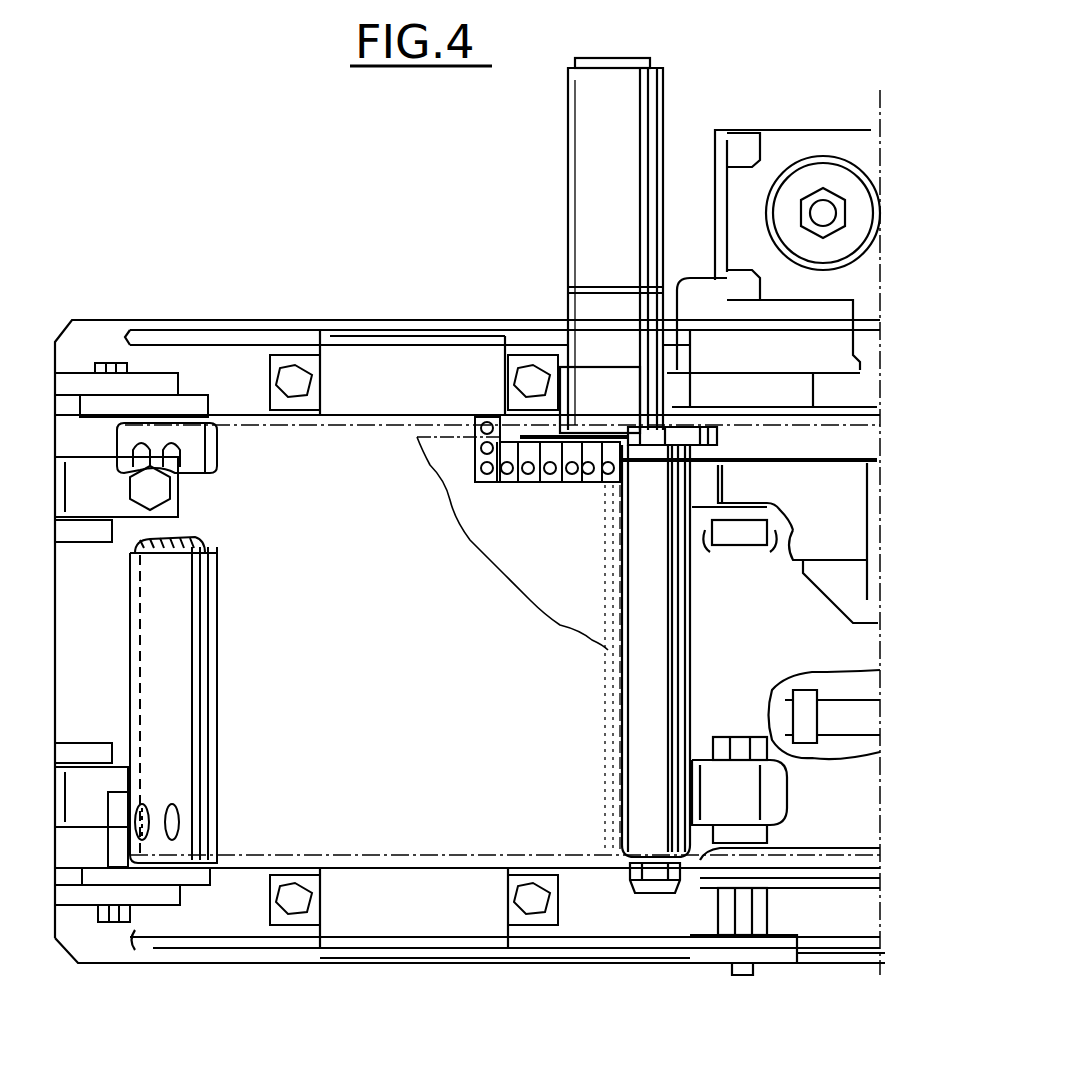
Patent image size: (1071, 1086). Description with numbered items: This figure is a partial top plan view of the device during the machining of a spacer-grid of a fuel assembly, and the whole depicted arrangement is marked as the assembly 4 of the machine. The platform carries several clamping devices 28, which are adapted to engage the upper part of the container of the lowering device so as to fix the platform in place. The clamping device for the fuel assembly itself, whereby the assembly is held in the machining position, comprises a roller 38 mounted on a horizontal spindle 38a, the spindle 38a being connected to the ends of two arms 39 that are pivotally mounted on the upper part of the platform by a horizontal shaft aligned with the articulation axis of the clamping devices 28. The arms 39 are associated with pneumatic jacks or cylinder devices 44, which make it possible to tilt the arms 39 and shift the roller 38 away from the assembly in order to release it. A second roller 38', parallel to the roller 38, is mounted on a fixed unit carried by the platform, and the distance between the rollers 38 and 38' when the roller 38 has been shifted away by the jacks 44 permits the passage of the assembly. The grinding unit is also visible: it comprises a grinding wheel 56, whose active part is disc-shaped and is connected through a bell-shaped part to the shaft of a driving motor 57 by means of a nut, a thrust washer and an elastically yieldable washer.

The apparatus 4 is at (464, 597).
The clamping device 28 is at (742, 540).
The roller 38 is at (617, 651).
The second roller 38' is at (213, 700).
The horizontal spindle 38a is at (658, 893).
The arm 39 is at (812, 880).
The pneumatic jack 44 is at (822, 690).
The grinding wheel 56 is at (596, 428).
The driving motor 57 is at (590, 224).